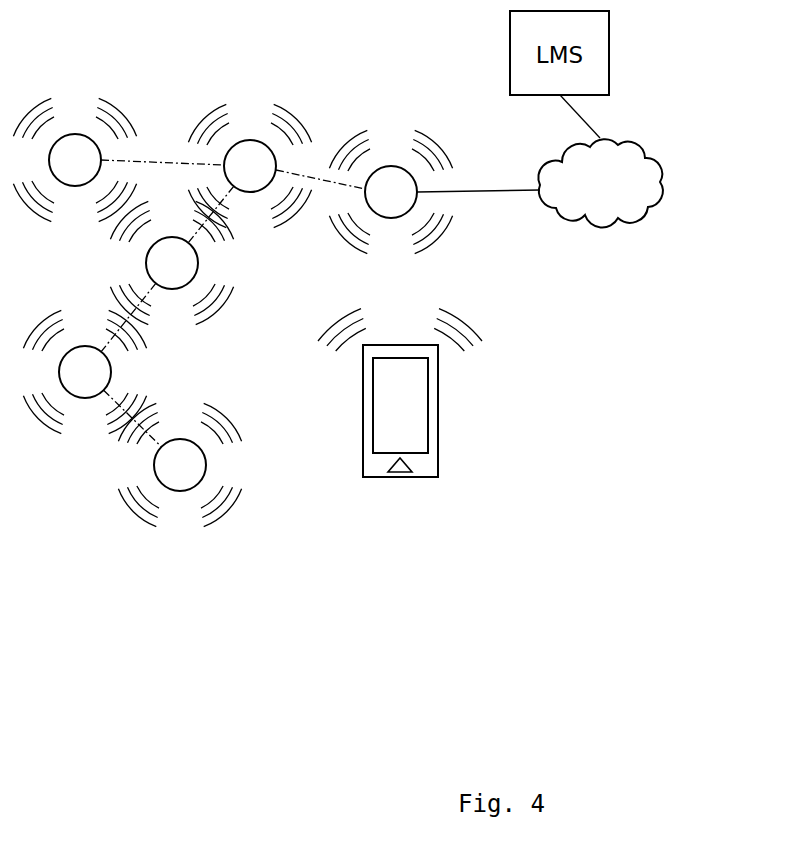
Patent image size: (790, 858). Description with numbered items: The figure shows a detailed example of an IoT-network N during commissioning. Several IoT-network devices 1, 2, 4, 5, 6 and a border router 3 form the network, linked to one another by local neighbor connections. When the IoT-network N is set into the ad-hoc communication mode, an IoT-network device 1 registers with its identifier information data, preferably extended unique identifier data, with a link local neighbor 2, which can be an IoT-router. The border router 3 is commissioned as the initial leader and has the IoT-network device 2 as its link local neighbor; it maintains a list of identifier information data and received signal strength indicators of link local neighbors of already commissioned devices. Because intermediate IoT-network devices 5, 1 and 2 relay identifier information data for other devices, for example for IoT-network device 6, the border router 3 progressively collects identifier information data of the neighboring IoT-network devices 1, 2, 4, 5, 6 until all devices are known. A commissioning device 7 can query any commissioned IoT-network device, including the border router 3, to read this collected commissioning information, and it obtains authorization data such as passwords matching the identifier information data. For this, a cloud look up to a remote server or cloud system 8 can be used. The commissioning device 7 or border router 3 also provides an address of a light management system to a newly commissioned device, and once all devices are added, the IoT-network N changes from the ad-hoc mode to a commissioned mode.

The IoT-network device 1 is at (171, 262).
The IoT-network device 2 is at (249, 165).
The border router 3 is at (390, 191).
The IoT-network device 4 is at (74, 159).
The IoT-network device 5 is at (84, 371).
The IoT-network device 6 is at (179, 464).
The commissioning device 7 is at (438, 473).
The cloud system 8 is at (657, 155).
The IoT-network N is at (617, 381).